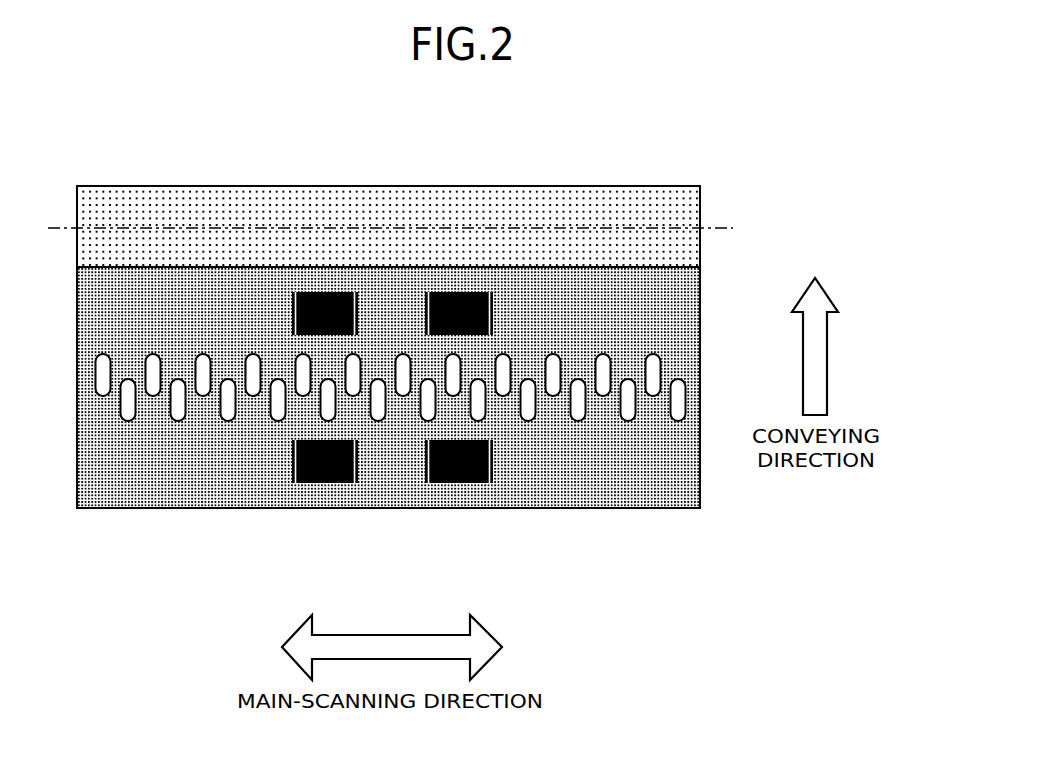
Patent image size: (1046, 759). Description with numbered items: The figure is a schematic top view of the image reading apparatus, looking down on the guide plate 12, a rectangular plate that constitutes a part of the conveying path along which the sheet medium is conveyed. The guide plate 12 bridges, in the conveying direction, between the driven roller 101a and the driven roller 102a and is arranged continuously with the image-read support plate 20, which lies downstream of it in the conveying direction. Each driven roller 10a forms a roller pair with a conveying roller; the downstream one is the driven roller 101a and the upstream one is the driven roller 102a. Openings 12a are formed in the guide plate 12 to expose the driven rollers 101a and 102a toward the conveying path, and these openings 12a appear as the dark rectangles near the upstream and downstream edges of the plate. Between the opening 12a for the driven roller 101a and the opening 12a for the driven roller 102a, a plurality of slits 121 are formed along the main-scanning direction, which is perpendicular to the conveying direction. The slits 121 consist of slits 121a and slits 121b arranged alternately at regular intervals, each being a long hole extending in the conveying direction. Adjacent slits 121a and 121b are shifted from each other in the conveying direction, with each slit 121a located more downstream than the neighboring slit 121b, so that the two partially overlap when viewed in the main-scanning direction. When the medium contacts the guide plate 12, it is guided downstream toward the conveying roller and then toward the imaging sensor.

The image-read support plate 20 is at (673, 193).
The guide plate 12 is at (688, 297).
The openings 12a is at (313, 306).
The driven roller 10a is at (392, 362).
The driven roller 101a is at (460, 302).
The driven roller 102a is at (462, 467).
The slits 121 is at (391, 389).
The slit 121a is at (253, 352).
The slit 121b is at (278, 422).